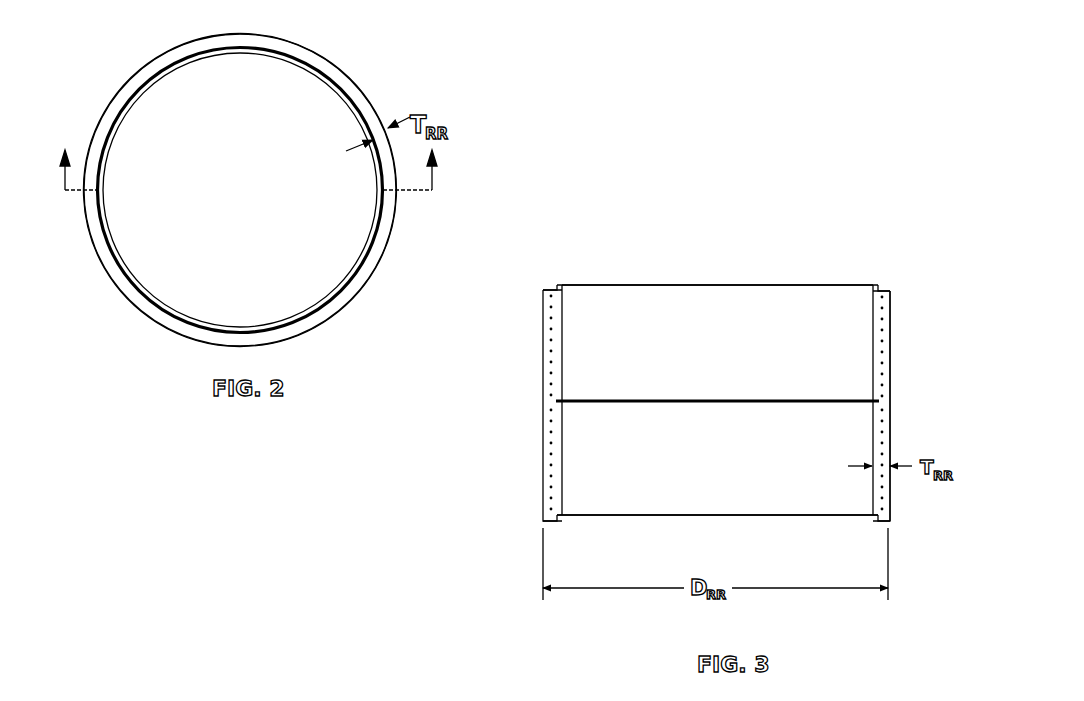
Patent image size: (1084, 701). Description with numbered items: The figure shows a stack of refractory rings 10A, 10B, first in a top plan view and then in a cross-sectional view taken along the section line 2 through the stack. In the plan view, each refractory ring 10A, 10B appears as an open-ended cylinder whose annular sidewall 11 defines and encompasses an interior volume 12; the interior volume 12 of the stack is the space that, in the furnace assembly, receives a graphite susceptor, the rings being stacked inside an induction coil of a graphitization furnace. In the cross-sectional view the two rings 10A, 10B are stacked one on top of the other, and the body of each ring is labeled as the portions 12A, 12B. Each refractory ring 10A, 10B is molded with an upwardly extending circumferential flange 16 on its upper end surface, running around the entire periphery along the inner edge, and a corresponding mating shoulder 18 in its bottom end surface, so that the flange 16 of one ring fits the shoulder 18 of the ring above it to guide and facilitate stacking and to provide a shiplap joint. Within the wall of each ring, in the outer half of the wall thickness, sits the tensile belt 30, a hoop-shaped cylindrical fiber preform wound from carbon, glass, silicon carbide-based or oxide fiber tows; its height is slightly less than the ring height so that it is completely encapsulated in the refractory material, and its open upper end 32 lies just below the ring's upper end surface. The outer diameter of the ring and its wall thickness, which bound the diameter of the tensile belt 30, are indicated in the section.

In FIG. 2, the section line 2- 2 is at (250, 170).
In FIG. 3, the refractory ring 10A is at (535, 475).
In FIG. 2, the refractory ring 10B is at (360, 302).
In FIG. 3, the refractory ring 10B is at (537, 347).
In FIG. 2, the annular sidewall 11 is at (383, 243).
In FIG. 3, the annular sidewall 11 is at (893, 427).
In FIG. 2, the interior volume 12 is at (241, 200).
In FIG. 3, the first ring body 12A is at (728, 484).
In FIG. 3, the second ring body 12B is at (728, 363).
In FIG. 2, the circumferential flange 16 is at (353, 100).
In FIG. 3, the circumferential flange 16 is at (877, 283).
In FIG. 3, the mating shoulder 18 is at (590, 518).
In FIG. 3, the tensile belt 30 is at (537, 498).
In FIG. 3, the open upper end 32 is at (548, 432).